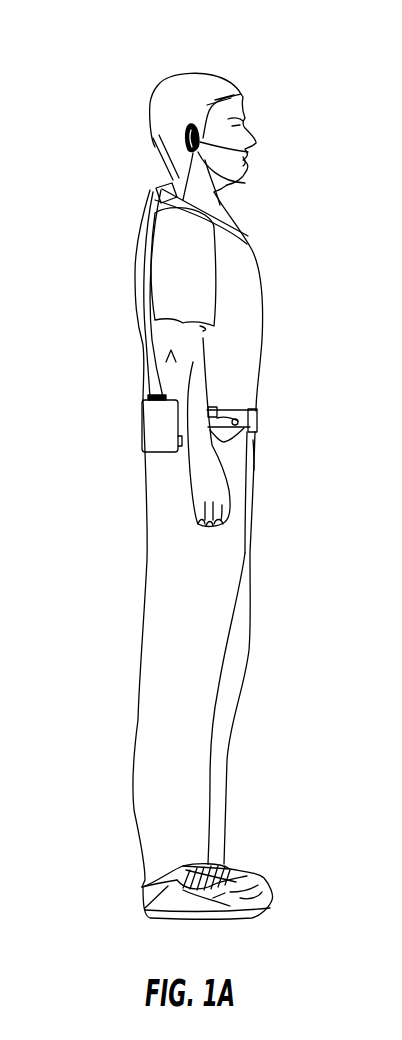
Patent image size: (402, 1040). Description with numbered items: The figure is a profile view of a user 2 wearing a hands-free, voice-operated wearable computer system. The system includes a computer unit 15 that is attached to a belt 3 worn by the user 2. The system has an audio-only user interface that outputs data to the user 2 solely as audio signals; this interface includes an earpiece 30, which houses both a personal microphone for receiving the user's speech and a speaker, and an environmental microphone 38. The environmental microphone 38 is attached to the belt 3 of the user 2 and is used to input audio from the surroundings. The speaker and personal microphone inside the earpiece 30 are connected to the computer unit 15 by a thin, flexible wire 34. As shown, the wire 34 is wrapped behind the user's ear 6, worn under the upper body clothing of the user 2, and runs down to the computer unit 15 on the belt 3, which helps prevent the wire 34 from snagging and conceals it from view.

The user 2 is at (225, 44).
The earpiece 30 is at (238, 163).
The ear 6 is at (232, 184).
The wire 34 is at (162, 190).
The computer unit 15 is at (153, 440).
The environmental microphone 38 is at (252, 424).
The belt 3 is at (256, 458).